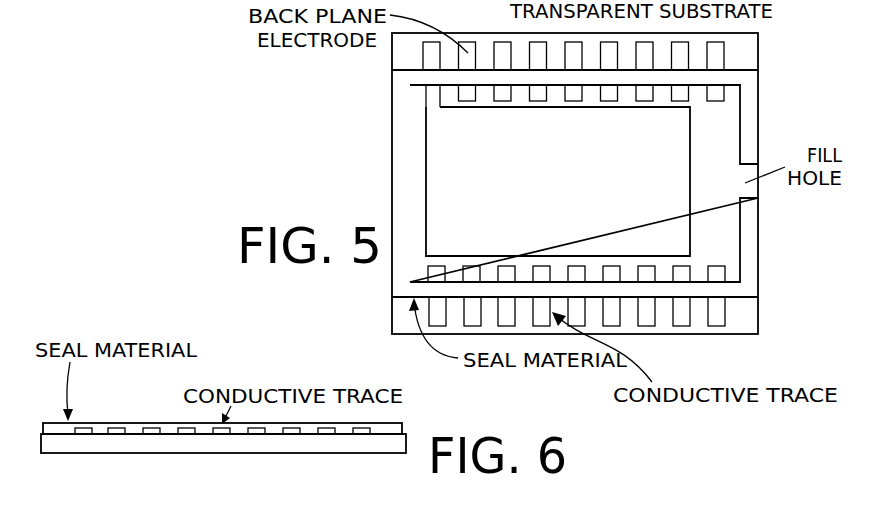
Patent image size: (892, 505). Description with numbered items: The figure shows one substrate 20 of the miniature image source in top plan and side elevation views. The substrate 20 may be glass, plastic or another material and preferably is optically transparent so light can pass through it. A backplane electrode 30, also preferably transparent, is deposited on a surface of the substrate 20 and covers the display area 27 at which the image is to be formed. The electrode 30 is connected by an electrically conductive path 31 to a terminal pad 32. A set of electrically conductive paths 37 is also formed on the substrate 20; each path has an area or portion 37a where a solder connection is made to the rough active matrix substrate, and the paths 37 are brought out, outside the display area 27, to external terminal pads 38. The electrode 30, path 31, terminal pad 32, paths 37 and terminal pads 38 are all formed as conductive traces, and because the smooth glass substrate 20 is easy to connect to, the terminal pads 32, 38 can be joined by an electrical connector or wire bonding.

In FIG. 5, the substrate 20 is at (392, 53).
In FIG. 6, the substrate 20 is at (54, 453).
In FIG. 5, the display area 27 is at (450, 154).
In FIG. 5, the backplane electrode 30 is at (442, 122).
In FIG. 5, the electrically conductive path 31 is at (435, 97).
In FIG. 5, the terminal pad 32 is at (423, 57).
In FIG. 5, the electrically conductive paths 37 is at (724, 58).
In FIG. 5, the portions of the electrically conductive paths 37a is at (692, 99).
In FIG. 5, the terminal pads 38 is at (722, 34).